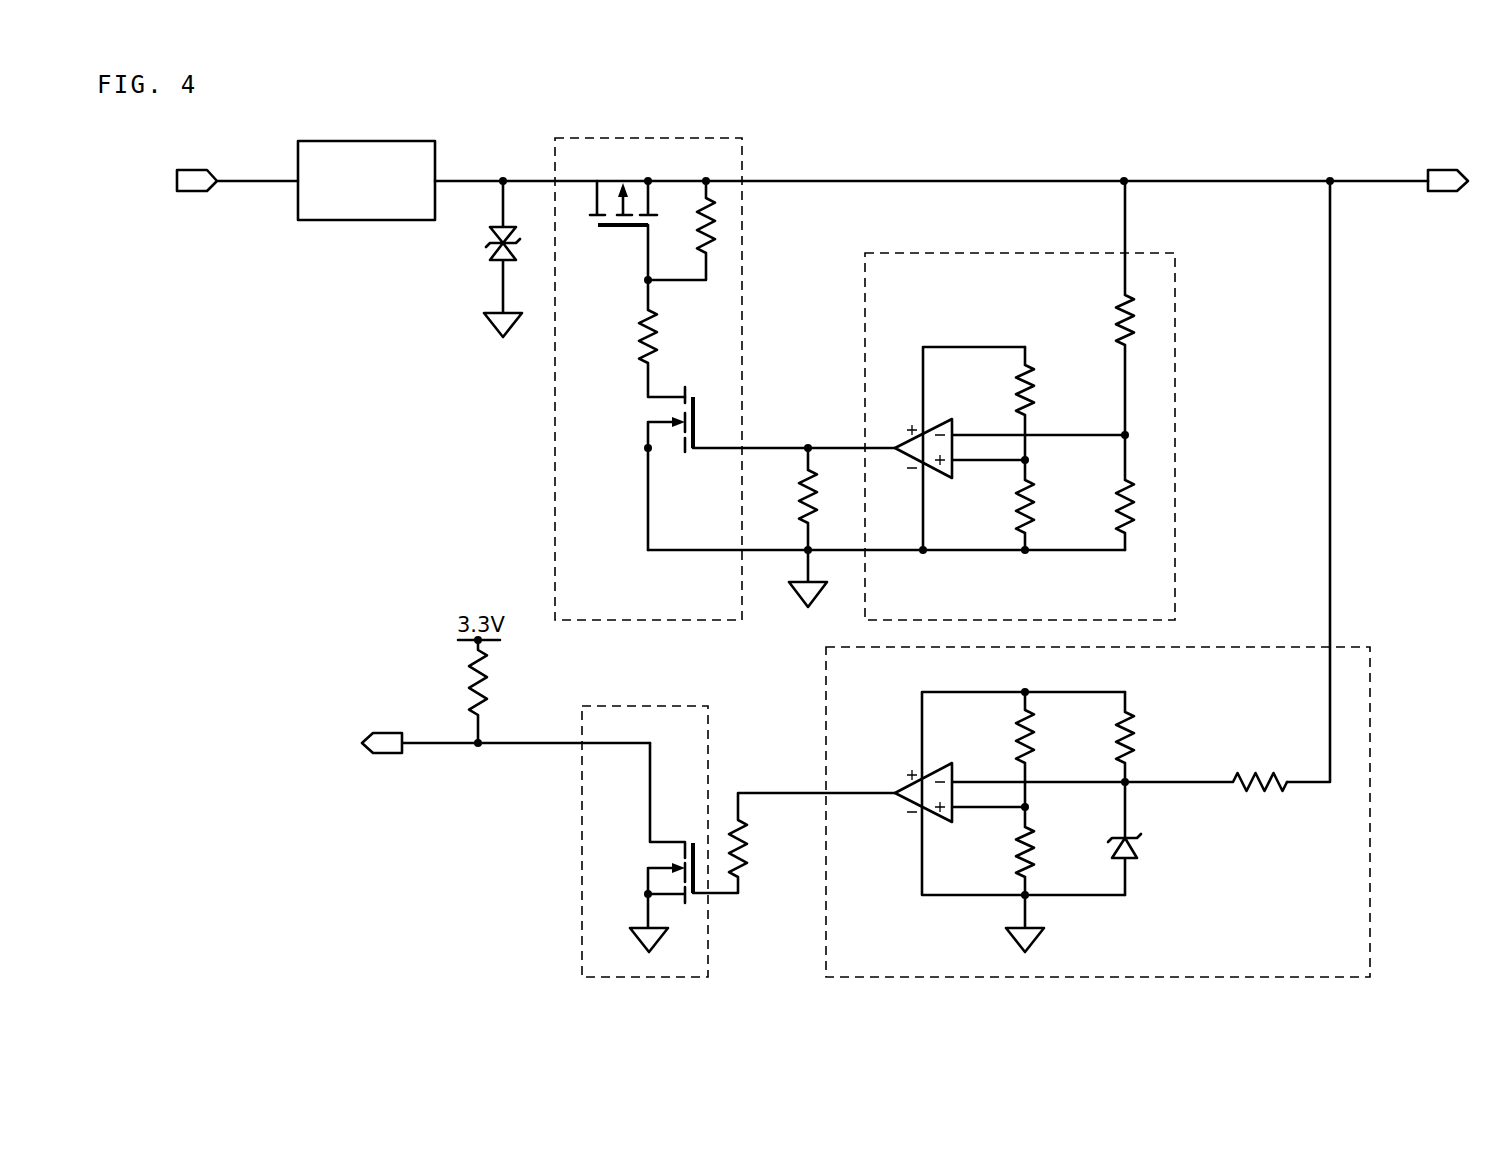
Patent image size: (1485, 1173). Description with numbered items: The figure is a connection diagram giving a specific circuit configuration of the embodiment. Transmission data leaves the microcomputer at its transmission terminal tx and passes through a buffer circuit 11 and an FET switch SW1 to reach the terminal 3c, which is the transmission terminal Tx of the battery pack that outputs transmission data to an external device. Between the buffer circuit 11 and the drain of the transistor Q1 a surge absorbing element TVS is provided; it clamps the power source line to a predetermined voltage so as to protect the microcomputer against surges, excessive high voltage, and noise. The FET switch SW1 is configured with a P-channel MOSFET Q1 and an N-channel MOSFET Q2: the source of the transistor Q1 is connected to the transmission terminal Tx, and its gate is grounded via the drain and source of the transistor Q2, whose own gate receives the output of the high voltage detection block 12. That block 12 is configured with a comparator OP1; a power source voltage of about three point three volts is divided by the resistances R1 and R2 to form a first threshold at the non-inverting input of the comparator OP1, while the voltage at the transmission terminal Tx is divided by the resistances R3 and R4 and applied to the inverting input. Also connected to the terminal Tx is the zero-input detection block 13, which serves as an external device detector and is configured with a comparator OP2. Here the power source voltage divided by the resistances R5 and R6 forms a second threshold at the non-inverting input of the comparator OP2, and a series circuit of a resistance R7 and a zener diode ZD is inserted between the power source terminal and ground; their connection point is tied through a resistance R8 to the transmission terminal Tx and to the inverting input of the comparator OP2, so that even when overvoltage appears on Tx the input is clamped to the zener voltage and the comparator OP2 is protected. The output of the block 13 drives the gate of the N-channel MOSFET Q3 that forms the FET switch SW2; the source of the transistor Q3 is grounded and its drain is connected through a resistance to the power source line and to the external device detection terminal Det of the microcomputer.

The buffer circuit 11 is at (366, 141).
The high voltage detection block 12 is at (968, 253).
The zero-input detection block 13 is at (1269, 647).
The terminal 3c is at (1441, 170).
The transmission terminal tx is at (196, 192).
The surge absorbing element TVS is at (497, 252).
The FET switch SW1 is at (647, 138).
The FET switch SW2 is at (644, 706).
The P-channel MOSFET Q1 is at (607, 230).
The N-channel MOSFET Q2 is at (682, 455).
The N-channel MOSFET Q3 is at (688, 836).
The resistance R1 is at (1036, 392).
The resistance R2 is at (1036, 504).
The resistance R3 is at (1116, 345).
The resistance R4 is at (1114, 493).
The resistance R5 is at (1036, 752).
The resistance R6 is at (1036, 847).
The resistance R7 is at (1114, 725).
The resistance R8 is at (1256, 770).
The comparator OP1 is at (940, 482).
The comparator OP2 is at (940, 827).
The zener diode ZD is at (1140, 858).
The external device detection terminal Det is at (379, 731).